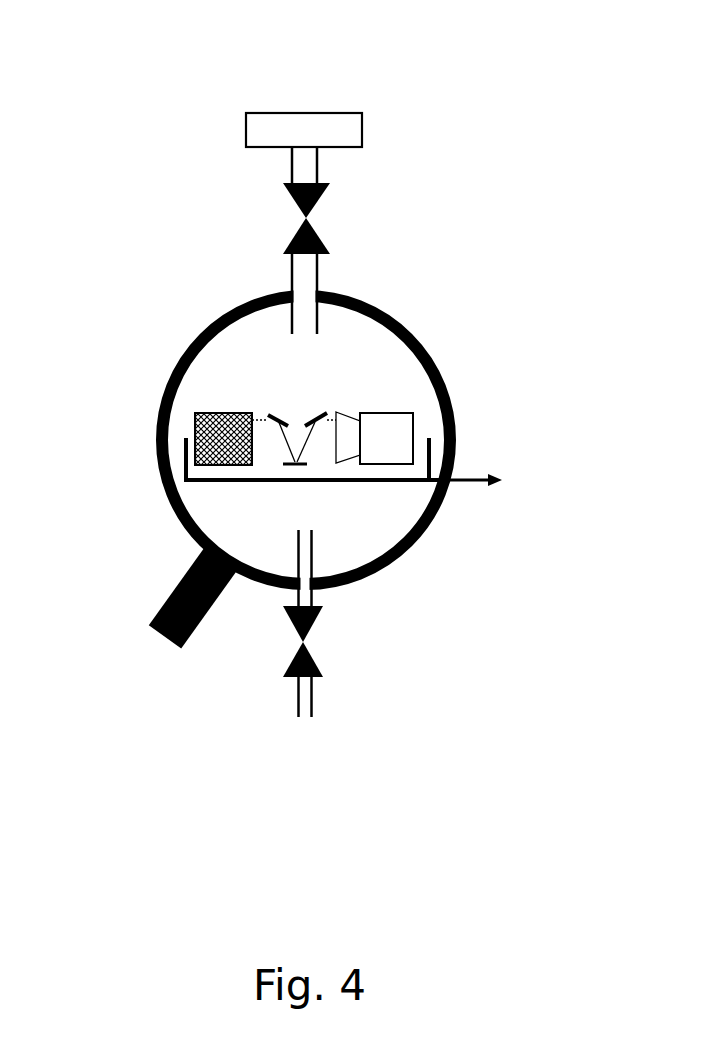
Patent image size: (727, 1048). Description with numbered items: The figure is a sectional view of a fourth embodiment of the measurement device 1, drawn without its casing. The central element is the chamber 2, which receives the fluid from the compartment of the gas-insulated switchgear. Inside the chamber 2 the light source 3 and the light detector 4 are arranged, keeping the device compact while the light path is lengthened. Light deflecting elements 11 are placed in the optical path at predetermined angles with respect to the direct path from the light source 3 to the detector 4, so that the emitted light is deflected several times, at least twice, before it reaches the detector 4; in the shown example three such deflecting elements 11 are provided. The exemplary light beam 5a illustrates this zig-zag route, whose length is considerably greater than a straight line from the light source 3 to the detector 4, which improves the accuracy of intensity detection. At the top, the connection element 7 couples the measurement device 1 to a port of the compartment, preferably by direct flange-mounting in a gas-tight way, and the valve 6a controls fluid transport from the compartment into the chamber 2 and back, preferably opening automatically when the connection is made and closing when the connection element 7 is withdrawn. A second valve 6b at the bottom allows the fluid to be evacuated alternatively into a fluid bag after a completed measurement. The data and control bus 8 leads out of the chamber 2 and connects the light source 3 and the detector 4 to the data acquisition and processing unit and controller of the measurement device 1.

The measurement device 1 is at (57, 92).
The chamber 2 is at (393, 317).
The light source 3 is at (195, 480).
The light detector 4 is at (400, 423).
The light beam 5a is at (307, 423).
The valve 6a is at (297, 203).
The second valve 6b is at (297, 633).
The connection element 7 is at (353, 133).
The data and control bus 8 is at (460, 477).
The light deflecting elements 11 is at (288, 435).